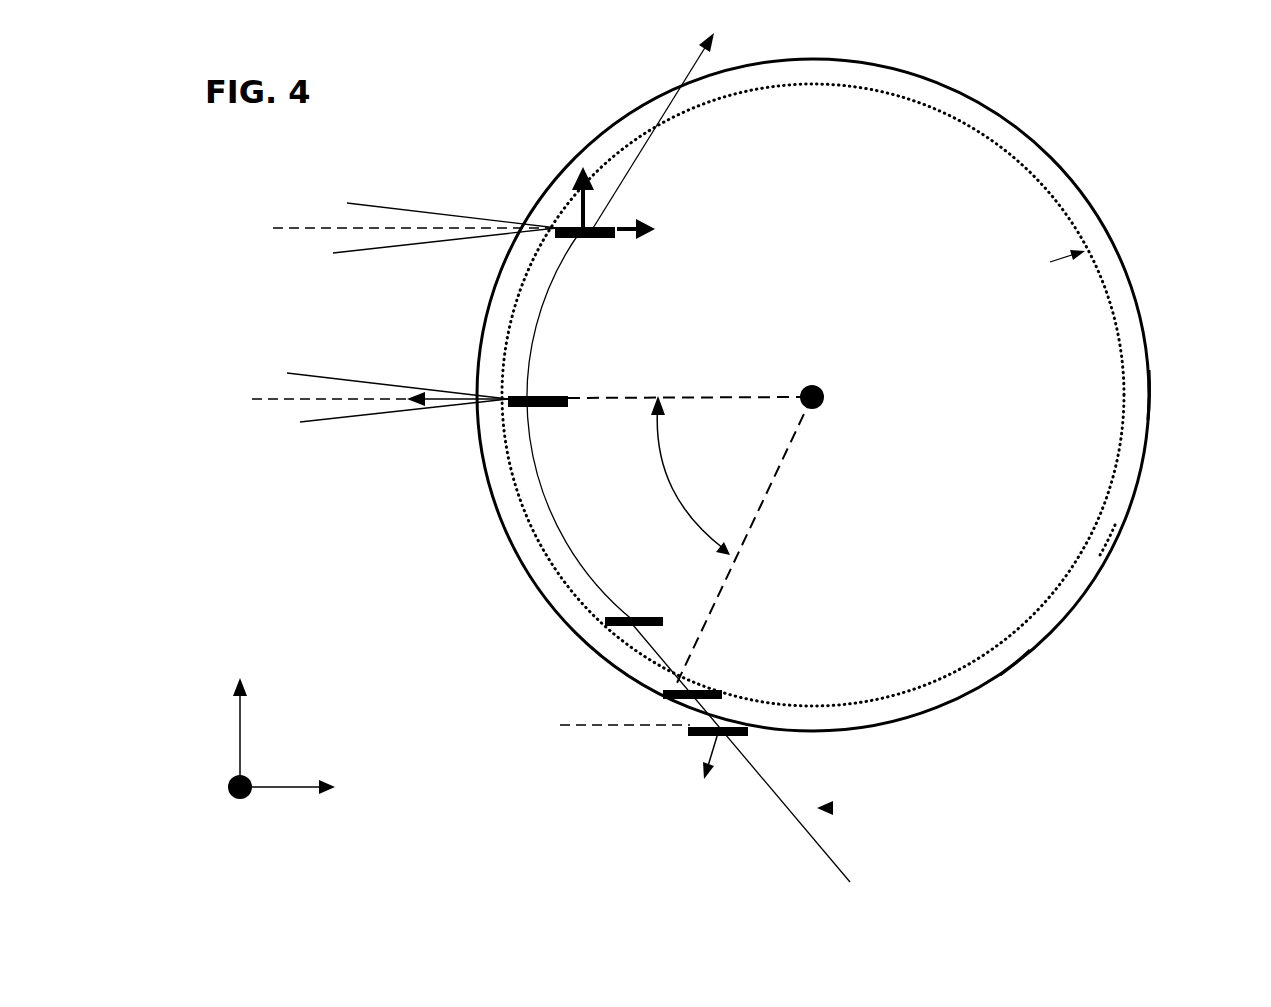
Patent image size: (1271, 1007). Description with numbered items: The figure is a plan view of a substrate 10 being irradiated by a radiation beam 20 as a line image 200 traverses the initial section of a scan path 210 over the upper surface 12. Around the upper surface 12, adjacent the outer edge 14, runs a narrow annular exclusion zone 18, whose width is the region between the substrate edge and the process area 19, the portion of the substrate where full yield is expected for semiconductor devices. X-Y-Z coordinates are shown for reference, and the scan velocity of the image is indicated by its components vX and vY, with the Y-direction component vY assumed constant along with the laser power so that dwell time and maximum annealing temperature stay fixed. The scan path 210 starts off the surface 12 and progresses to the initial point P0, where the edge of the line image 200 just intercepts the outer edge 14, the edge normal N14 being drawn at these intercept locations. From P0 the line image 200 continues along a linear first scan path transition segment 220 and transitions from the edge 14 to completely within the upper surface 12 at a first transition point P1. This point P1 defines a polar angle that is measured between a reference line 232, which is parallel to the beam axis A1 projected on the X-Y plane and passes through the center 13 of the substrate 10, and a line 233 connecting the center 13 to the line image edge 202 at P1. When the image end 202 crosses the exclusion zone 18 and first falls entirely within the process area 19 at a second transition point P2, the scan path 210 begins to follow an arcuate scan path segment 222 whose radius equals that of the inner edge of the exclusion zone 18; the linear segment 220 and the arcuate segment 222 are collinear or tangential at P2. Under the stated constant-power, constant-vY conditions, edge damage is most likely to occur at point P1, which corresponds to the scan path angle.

The substrate 10 is at (1118, 171).
The upper surface 12 is at (1052, 540).
The center 13 is at (828, 397).
The outer edge 14 is at (1018, 662).
The exclusion zone 18 is at (1137, 370).
The process area 19 is at (1050, 335).
The radiation beam 20 is at (357, 240).
The line image 200 is at (740, 733).
The line image edge 202 is at (560, 726).
The scan path 210 is at (832, 808).
The scan path transition segment 220 is at (825, 858).
The arcuate scan path segment 222 is at (537, 342).
The reference line 232 is at (707, 397).
The line connecting center to line image edge 233 is at (767, 492).
The edge normal N14 is at (432, 396).
The initial point P0 is at (720, 725).
The first transition point P1 is at (665, 694).
The second transition point P2 is at (636, 618).
The axis A1 is at (311, 230).
The X-direction scan velocity component vX is at (648, 226).
The Y-direction scan velocity component vY is at (583, 200).